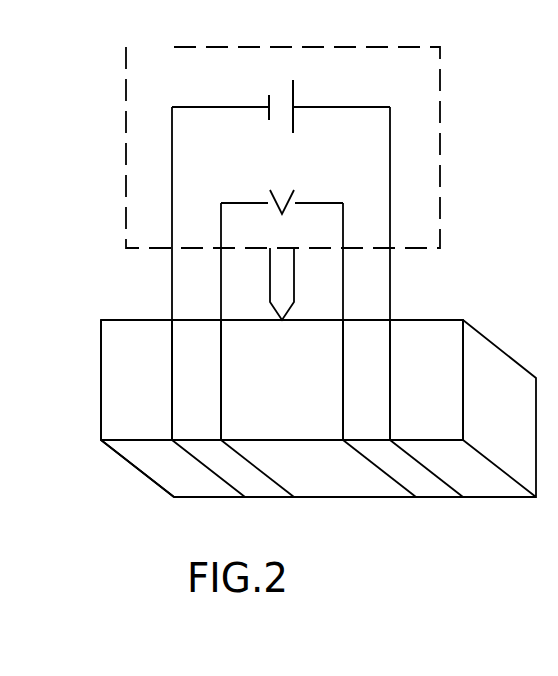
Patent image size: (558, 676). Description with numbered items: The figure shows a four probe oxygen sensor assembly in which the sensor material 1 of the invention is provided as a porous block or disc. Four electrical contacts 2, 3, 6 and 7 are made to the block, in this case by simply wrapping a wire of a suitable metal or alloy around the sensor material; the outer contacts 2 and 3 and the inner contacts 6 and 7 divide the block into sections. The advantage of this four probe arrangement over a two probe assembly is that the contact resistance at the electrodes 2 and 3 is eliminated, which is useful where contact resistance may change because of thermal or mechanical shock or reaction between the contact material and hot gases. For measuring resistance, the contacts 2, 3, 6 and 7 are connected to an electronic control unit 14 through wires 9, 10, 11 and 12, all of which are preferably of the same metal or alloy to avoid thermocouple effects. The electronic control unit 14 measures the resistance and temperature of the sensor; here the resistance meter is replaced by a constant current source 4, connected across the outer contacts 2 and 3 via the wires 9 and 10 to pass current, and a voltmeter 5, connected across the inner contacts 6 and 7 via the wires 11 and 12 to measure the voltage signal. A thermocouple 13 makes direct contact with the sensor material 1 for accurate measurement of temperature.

The sensor material 1 is at (488, 375).
The electrical contact 2 is at (172, 372).
The electrical contact 3 is at (392, 372).
The constant current source 4 is at (297, 93).
The voltmeter 5 is at (297, 192).
The electrical contact 6 is at (221, 372).
The electrical contact 7 is at (343, 372).
The wire 9 is at (172, 282).
The wire 10 is at (392, 283).
The wire 11 is at (221, 282).
The wire 12 is at (344, 282).
The thermocouple 13 is at (280, 281).
The electronic control unit 14 is at (407, 65).